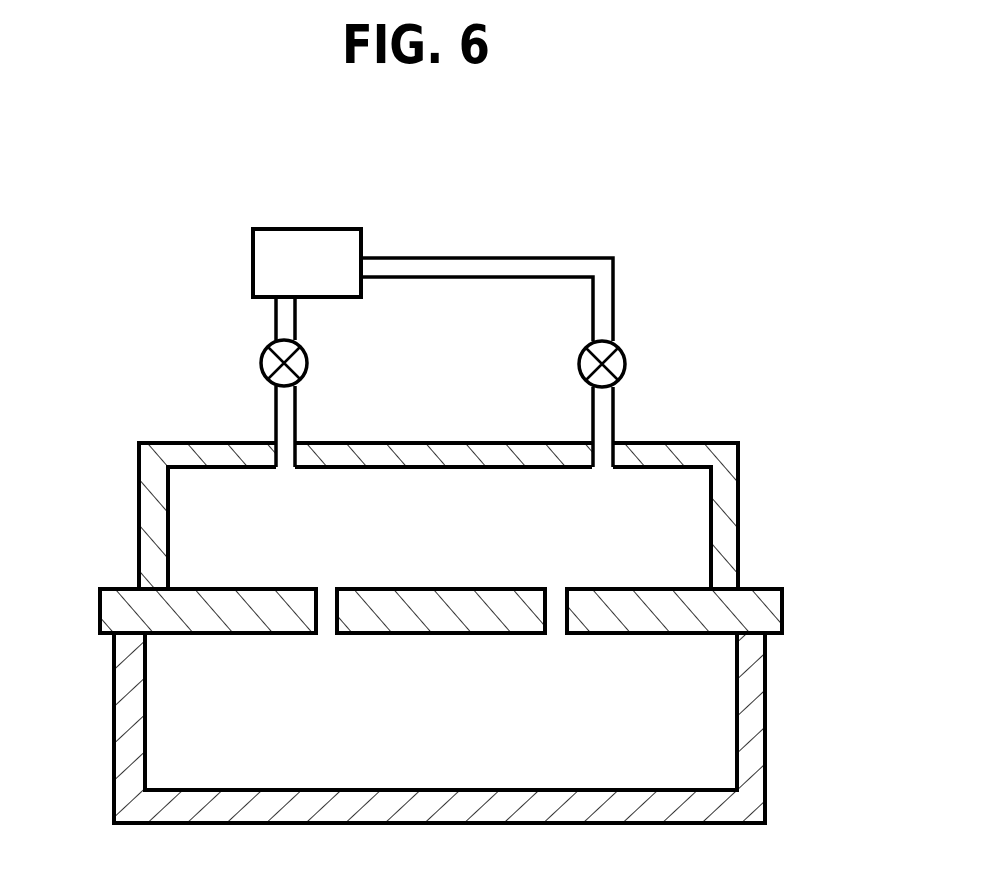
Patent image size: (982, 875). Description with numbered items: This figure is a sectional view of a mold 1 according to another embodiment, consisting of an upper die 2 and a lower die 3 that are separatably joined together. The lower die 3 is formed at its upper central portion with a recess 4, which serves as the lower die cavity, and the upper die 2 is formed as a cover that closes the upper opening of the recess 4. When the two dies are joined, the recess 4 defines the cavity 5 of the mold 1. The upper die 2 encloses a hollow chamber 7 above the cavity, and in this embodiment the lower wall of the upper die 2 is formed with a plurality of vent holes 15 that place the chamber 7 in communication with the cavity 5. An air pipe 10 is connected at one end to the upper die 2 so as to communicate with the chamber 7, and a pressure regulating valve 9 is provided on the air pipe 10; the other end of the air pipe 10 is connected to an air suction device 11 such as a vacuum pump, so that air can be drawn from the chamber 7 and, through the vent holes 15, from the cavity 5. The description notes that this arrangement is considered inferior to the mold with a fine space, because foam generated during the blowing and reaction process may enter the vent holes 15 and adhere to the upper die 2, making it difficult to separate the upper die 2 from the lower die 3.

The mold 1 is at (690, 292).
The upper die 2 is at (441, 507).
The lower die 3 is at (441, 728).
The recess 4 is at (713, 685).
The cavity 5 is at (145, 698).
The hollow chamber 7 is at (187, 527).
The pressure regulating valve 9 is at (618, 362).
The air pipe 10 is at (483, 262).
The air suction device 11 is at (306, 245).
The vent holes 15 is at (327, 600).